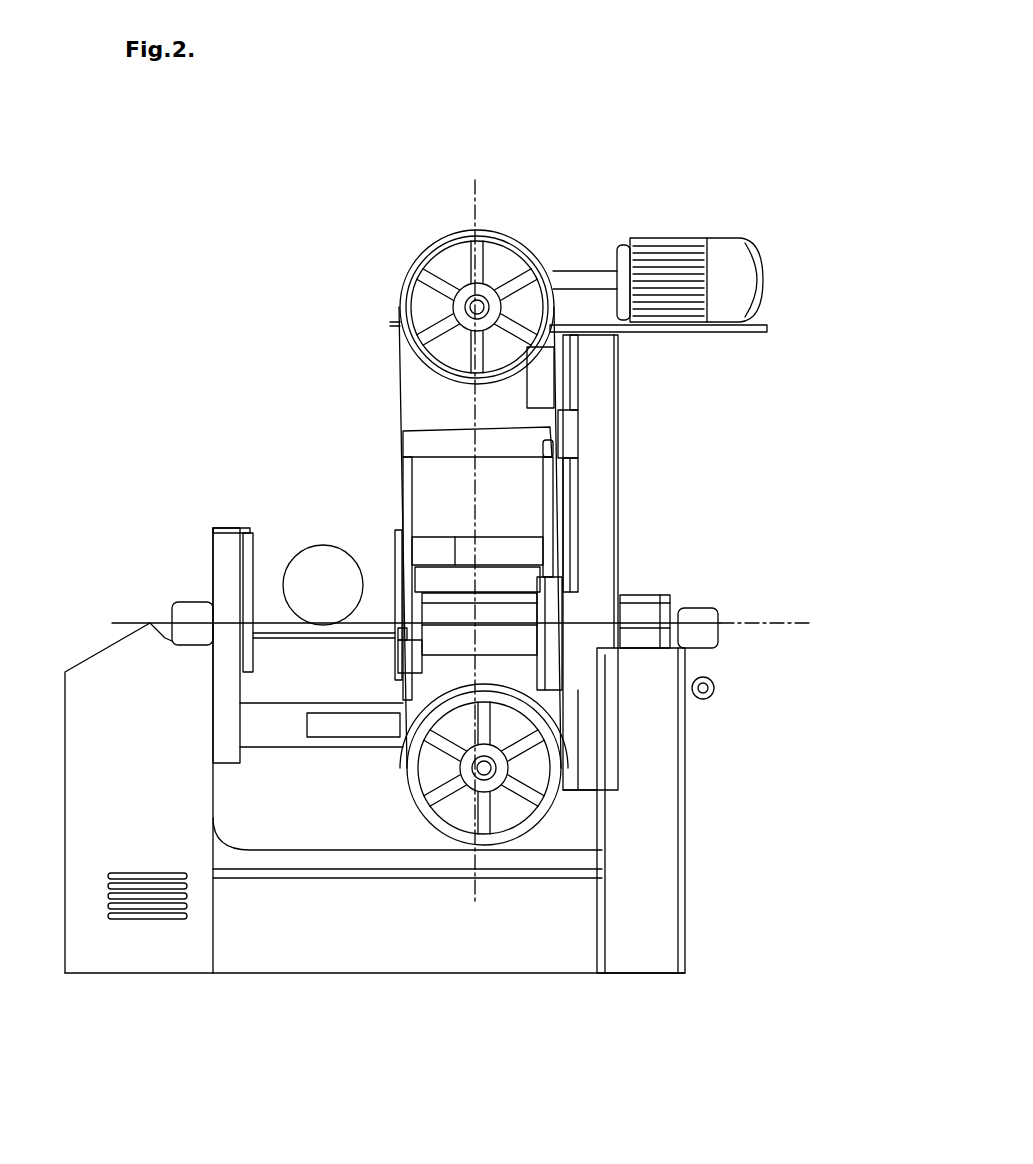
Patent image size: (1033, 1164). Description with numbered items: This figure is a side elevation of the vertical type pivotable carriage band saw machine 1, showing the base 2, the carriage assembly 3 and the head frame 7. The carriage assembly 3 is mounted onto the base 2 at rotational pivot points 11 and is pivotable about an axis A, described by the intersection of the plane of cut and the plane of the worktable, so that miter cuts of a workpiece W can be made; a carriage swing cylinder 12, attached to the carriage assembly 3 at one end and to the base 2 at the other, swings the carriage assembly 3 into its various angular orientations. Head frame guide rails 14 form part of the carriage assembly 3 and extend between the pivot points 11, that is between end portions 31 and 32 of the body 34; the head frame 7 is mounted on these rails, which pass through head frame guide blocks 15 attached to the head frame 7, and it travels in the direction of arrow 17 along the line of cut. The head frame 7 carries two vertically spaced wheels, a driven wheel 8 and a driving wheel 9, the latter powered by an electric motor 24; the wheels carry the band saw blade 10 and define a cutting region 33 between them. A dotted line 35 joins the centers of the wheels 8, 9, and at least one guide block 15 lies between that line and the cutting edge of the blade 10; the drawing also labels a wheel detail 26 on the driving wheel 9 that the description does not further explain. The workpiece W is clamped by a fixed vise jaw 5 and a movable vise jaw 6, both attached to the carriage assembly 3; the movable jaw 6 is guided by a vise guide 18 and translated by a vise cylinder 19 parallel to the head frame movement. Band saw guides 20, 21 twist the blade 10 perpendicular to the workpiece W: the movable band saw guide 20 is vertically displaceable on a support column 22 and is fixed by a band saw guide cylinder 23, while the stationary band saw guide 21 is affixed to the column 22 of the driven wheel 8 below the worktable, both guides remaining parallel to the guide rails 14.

The band saw machine 1 is at (733, 490).
The base 2 is at (650, 915).
The carriage assembly 3 is at (298, 820).
The fixed vise jaw 5 is at (250, 540).
The movable vise jaw 6 is at (395, 557).
The head frame 7 is at (578, 373).
The driven wheel 8 is at (467, 752).
The driving wheel 9 is at (496, 289).
The band saw blade 10 is at (397, 398).
The rotational pivot points 11 is at (680, 632).
The carriage swing cylinder 12 is at (712, 697).
The head frame guide rails 14 is at (333, 722).
The head frame guide blocks 15 is at (457, 728).
The arrow 17 is at (517, 122).
The vise guide 18 is at (517, 545).
The vise cylinder 19 is at (443, 580).
The movable band saw guide 20 is at (407, 432).
The stationary band saw guide 21 is at (410, 658).
The support column 22 is at (595, 478).
The band saw guide cylinder 23 is at (548, 612).
The electric motor 24 is at (757, 270).
The wheel rim 26 is at (508, 250).
The end portion 31 is at (213, 556).
The end portion 32 is at (668, 595).
The cutting region 33 is at (388, 498).
The body 34 is at (360, 771).
The dotted line 35 is at (477, 207).
The workpiece W is at (323, 570).
The axis A is at (165, 620).